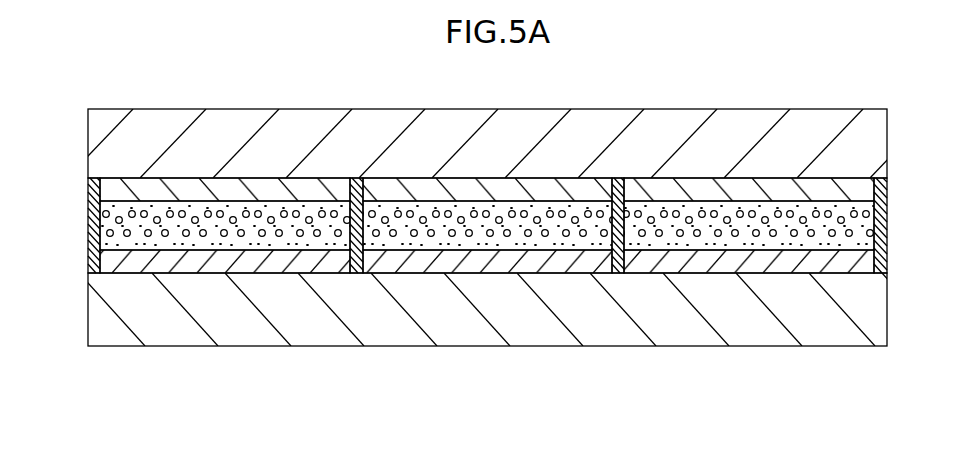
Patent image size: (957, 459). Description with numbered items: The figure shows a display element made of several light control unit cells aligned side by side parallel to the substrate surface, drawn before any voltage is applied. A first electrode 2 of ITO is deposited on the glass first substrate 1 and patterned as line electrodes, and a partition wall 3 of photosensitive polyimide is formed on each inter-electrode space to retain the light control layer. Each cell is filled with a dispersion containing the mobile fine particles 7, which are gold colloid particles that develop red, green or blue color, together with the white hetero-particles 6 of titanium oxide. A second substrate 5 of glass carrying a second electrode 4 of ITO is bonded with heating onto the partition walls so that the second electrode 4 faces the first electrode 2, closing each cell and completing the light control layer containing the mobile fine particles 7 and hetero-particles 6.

The first substrate 1 is at (873, 317).
The first electrode 2 is at (390, 265).
The partition wall 3 is at (360, 178).
The second electrode 4 is at (223, 188).
The second substrate 5 is at (879, 135).
The hetero-particles 6 is at (133, 208).
The mobile fine particles 7 is at (120, 242).